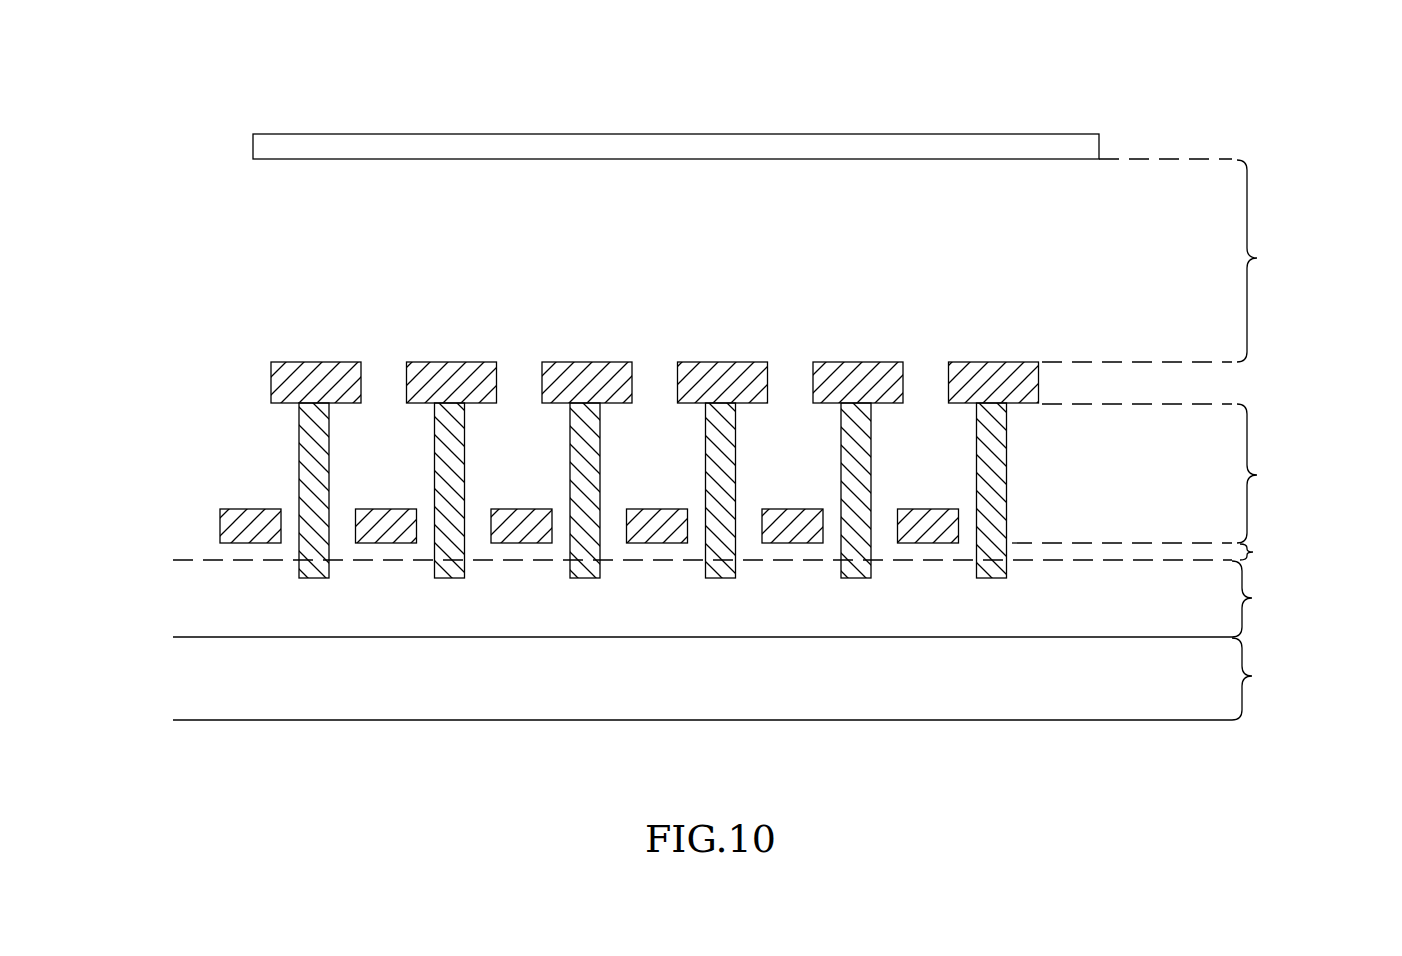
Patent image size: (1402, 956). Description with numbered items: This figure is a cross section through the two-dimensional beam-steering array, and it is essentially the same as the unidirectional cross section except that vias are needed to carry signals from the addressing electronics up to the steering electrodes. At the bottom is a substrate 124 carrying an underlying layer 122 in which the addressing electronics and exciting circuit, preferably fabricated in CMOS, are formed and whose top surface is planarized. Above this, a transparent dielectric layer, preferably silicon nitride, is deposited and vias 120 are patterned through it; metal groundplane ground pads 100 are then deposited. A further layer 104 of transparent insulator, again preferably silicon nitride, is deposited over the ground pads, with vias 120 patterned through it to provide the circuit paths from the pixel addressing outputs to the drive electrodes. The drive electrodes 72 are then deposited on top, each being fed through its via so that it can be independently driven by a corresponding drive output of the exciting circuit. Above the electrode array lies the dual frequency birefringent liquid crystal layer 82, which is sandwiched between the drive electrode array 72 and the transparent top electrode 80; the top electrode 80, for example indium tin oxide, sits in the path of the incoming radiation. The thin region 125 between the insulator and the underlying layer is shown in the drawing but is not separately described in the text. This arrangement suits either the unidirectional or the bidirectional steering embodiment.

The transparent top electrode 80 is at (307, 133).
The dual frequency birefringent liquid crystal layer 82 is at (1258, 258).
The drive electrode array 72 is at (227, 384).
The vias 120 is at (436, 481).
The metal groundplane ground pads 100 is at (200, 517).
The transparent insulator layer 104 is at (1258, 475).
The thin layer 125 is at (1254, 552).
The underlying layer 122 is at (1253, 598).
The substrate 124 is at (1253, 676).